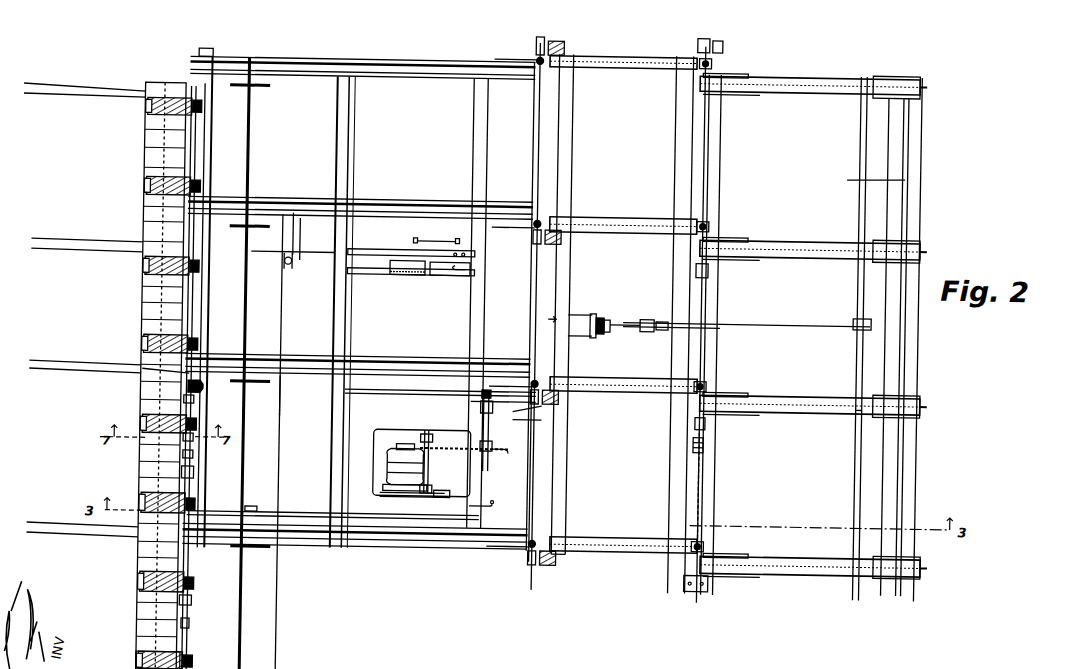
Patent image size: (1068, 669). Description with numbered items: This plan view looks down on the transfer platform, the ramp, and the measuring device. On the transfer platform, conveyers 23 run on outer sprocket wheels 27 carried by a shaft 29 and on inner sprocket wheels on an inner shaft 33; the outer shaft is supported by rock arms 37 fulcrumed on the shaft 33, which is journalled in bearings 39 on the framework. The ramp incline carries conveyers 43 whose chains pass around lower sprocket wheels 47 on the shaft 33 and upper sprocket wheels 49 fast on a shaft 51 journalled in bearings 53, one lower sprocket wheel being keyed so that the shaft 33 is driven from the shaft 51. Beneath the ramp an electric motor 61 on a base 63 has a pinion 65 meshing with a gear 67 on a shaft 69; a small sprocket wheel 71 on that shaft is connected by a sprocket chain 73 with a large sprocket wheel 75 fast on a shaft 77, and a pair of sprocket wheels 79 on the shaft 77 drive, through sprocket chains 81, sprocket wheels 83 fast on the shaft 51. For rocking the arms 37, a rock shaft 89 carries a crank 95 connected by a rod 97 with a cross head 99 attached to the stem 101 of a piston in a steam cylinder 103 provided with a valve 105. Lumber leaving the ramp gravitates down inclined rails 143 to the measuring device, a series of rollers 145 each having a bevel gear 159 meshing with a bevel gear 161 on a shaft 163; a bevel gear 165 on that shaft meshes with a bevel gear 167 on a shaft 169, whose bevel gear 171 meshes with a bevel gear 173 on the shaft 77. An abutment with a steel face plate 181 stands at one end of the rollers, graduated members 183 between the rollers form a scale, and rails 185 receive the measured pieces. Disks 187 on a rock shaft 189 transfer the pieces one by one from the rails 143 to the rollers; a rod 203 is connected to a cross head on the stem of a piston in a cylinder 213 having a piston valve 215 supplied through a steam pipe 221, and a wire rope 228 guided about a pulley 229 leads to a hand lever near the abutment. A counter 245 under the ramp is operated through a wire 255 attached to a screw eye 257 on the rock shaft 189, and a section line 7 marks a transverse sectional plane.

The section line 7- 7 is at (902, 174).
The conveyers 23 is at (798, 79).
The outer sprocket wheels 27 is at (923, 82).
The shaft 29 is at (919, 463).
The inner shaft 33 is at (703, 468).
The rock arms 37 is at (790, 90).
The bearings 39 is at (718, 44).
The conveyers 43 is at (626, 53).
The lower sprocket wheels 47 is at (708, 61).
The upper sprocket wheels 49 is at (532, 61).
The shaft 51 is at (532, 487).
The bearings 53 is at (531, 46).
The electric motor 61 is at (389, 485).
The base 63 is at (375, 453).
The pinion 65 is at (403, 500).
The gear 67 is at (443, 504).
The shaft 69 is at (432, 474).
The small sprocket wheel 71 is at (427, 445).
The sprocket chain 73 is at (462, 450).
The large sprocket wheel 75 is at (512, 452).
The shaft 77 is at (495, 445).
The sprocket wheels 79 is at (495, 414).
The sprocket chains 81 is at (543, 406).
The sprocket wheels 83 is at (543, 420).
The rock shaft 89 is at (857, 479).
The crank 95 is at (867, 326).
The rod 97 is at (744, 323).
The cross head 99 is at (645, 331).
The stem 101 is at (626, 323).
The steam cylinder 103 is at (588, 337).
The valve 105 is at (585, 315).
The inclined rails 143 is at (385, 80).
The rollers 145 is at (172, 202).
The bevel gear 159 is at (186, 478).
The bevel gear 161 is at (198, 426).
The shaft 163 is at (194, 628).
The bevel gear 165 is at (189, 392).
The bevel gear 167 is at (151, 364).
The shaft 169 is at (281, 400).
The bevel gear 171 is at (470, 397).
The bevel gear 173 is at (480, 404).
The steel face plate 181 is at (142, 668).
The members 183 is at (142, 157).
The rails 185 is at (78, 103).
The disks 187 is at (260, 93).
The rock shaft 189 is at (248, 291).
The rod 203 is at (310, 255).
The cylinder 213 is at (438, 245).
The piston valve 215 is at (424, 278).
The pipe 221 is at (459, 278).
The wire rope 228 is at (282, 634).
The pulley 229 is at (291, 268).
The counter 245 is at (490, 509).
The wire 255 is at (293, 516).
The screw eye 257 is at (253, 511).